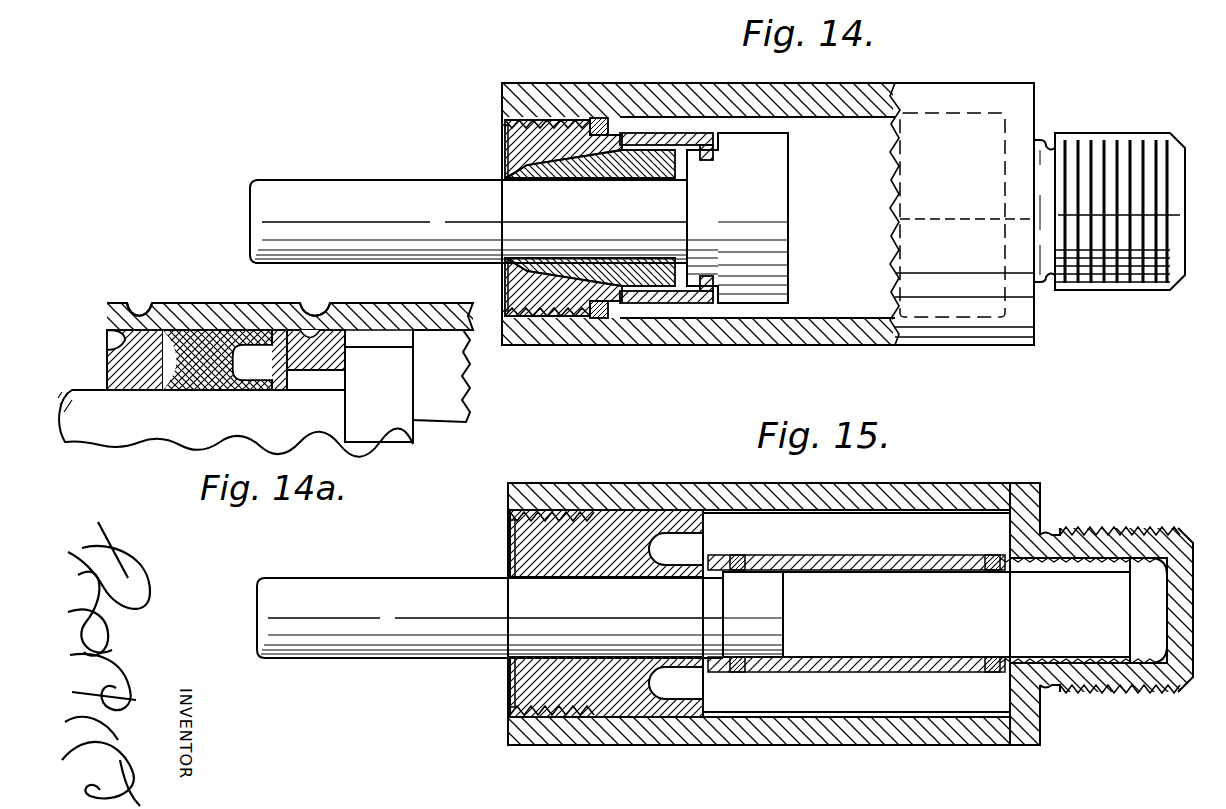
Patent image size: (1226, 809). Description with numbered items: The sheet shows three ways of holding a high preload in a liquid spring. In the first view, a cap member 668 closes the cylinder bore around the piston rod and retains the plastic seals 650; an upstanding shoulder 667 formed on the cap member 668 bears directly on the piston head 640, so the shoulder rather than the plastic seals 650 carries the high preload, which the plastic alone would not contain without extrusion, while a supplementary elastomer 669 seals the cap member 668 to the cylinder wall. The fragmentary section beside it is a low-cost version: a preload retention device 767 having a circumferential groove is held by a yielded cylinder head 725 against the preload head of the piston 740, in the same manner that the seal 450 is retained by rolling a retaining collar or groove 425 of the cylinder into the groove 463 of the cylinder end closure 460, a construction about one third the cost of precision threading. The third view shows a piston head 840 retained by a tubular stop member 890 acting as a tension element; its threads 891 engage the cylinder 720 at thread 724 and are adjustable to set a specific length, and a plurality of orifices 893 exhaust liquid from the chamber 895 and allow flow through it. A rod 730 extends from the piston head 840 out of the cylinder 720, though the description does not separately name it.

In FIG. 14, the piston head 640 is at (775, 165).
In FIG. 14, the seals 650 is at (610, 166).
In FIG. 14, the upstanding shoulder 667 is at (700, 135).
In FIG. 14, the cap member 668 is at (528, 128).
In FIG. 14, the supplementary elastomer 669 is at (599, 118).
In FIG. 14A, the retaining collar or groove 425 is at (140, 314).
In FIG. 14A, the seal 450 is at (218, 330).
In FIG. 14A, the cylinder end closure 460 is at (116, 372).
In FIG. 14A, the groove 463 is at (112, 345).
In FIG. 14A, the yielded cylinder head 725 is at (338, 290).
In FIG. 14A, the preload retention device 767 is at (345, 330).
In FIG. 14A, the piston 740 is at (396, 381).
In FIG. 15, the piston rod 730 is at (380, 660).
In FIG. 15, the piston head 840 is at (770, 598).
In FIG. 15, the tubular stop member 890 is at (890, 543).
In FIG. 15, the threads 891 is at (1115, 512).
In FIG. 15, the orifices 893 is at (737, 555).
In FIG. 15, the chamber 895 is at (958, 632).
In FIG. 15, the cylinder 720 is at (1172, 548).
In FIG. 15, the thread 724 is at (1138, 560).